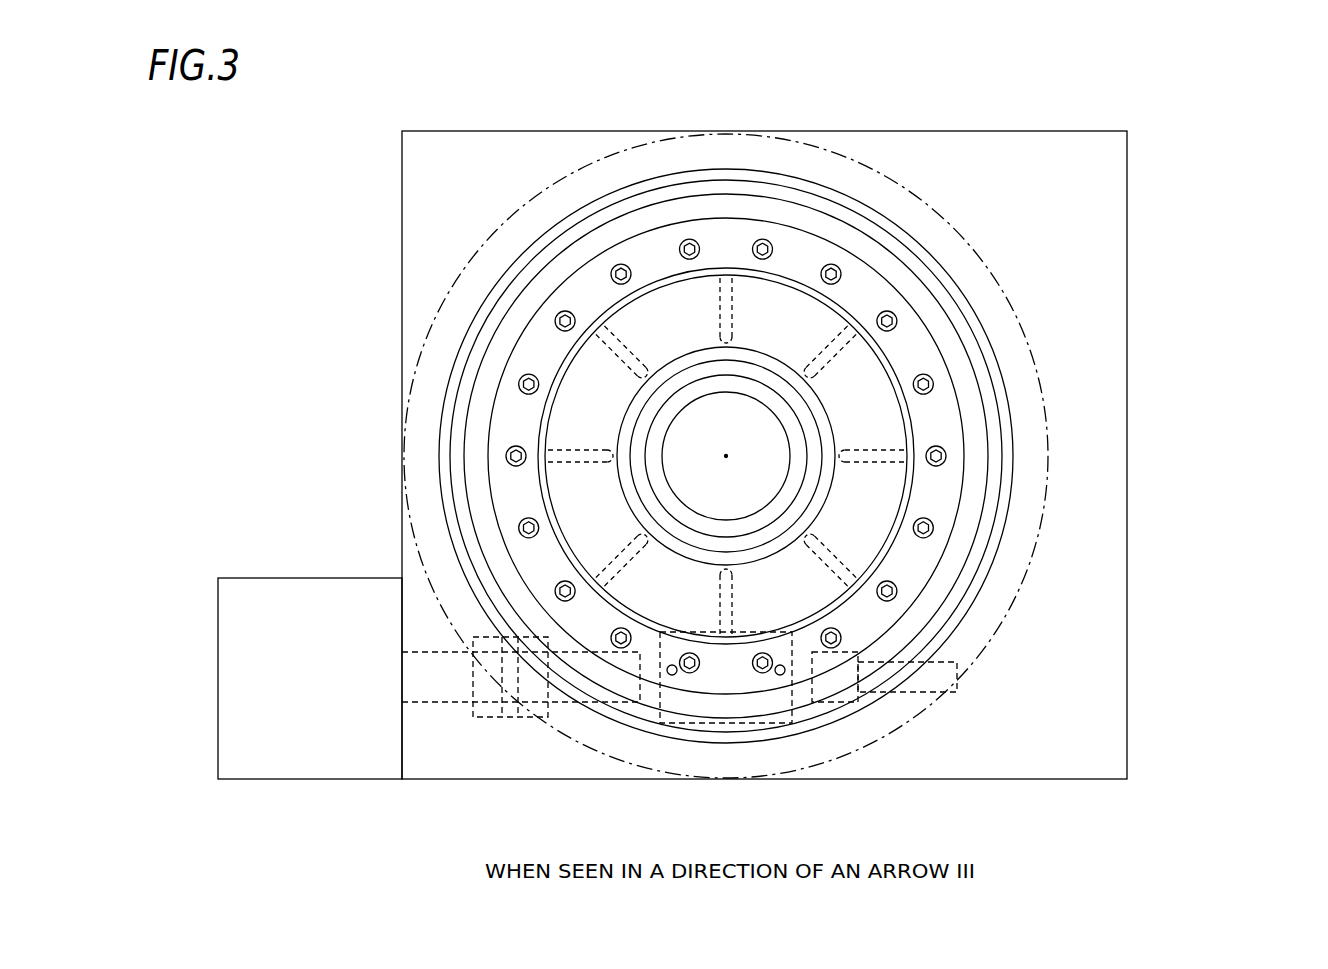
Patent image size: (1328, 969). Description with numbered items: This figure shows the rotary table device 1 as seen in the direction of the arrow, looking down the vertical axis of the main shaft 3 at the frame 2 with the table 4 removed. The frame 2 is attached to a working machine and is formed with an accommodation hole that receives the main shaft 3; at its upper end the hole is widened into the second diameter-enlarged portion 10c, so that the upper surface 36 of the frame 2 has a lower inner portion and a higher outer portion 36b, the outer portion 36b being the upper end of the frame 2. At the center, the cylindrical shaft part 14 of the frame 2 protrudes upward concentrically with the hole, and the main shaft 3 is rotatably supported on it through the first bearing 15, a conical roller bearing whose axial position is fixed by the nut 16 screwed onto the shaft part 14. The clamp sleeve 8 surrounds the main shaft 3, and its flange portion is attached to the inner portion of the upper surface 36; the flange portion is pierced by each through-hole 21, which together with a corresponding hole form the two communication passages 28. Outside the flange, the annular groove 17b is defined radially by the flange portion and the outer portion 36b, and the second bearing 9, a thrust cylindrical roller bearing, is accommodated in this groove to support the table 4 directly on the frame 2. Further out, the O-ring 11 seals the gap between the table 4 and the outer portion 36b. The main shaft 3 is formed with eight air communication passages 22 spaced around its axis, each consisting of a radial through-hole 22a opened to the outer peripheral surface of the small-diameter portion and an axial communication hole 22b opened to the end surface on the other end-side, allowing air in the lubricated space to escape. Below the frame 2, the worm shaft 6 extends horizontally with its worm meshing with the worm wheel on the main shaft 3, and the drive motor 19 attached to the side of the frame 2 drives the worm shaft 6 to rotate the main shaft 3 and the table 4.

The rotary table device 1 is at (1220, 160).
The frame 2 is at (1128, 594).
The main shaft 3 is at (873, 363).
The table 4 is at (1052, 456).
The worm shaft 6 is at (678, 728).
The clamp sleeve 8 is at (740, 673).
The second bearing 9 is at (740, 706).
The second diameter-enlarged portion 10c is at (883, 265).
The O-ring 11 is at (970, 597).
The shaft part 14 is at (787, 432).
The first bearing 15 is at (822, 442).
The nut 16 is at (805, 440).
The annular groove 17b is at (702, 456).
The drive motor 19 is at (303, 577).
The through-hole 21 is at (670, 674).
The air communication passage 22 is at (726, 456).
The through-hole 22a is at (838, 563).
The communication hole 22b is at (808, 541).
The communication passage 28 is at (726, 670).
The upper surface 36 is at (764, 455).
The outer portion 36b is at (993, 176).